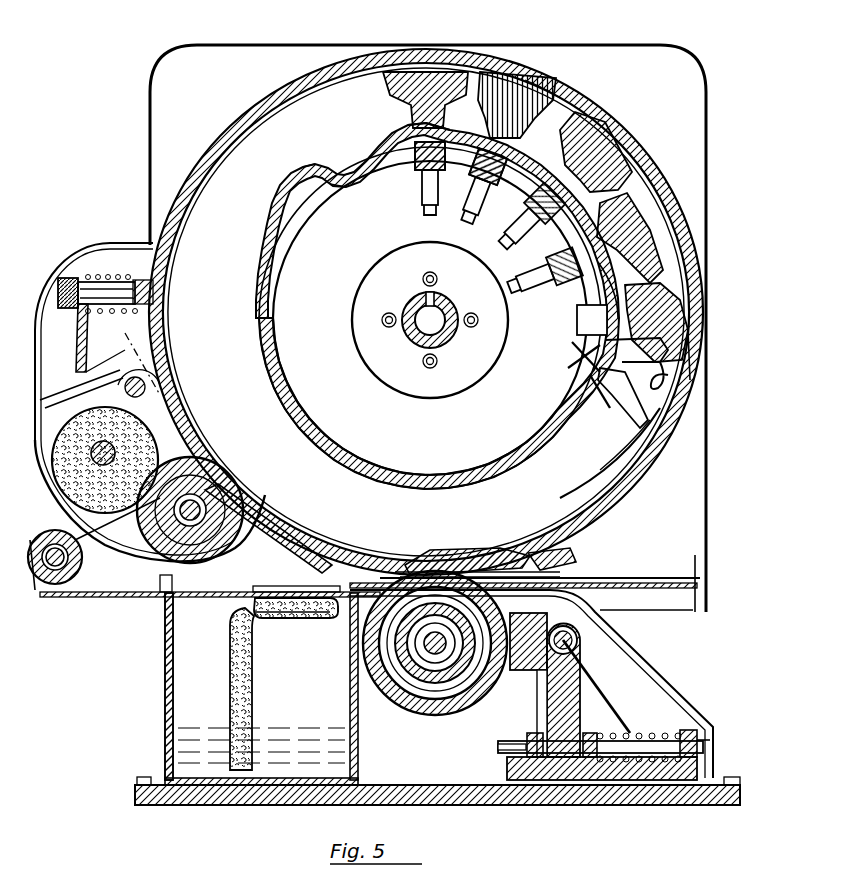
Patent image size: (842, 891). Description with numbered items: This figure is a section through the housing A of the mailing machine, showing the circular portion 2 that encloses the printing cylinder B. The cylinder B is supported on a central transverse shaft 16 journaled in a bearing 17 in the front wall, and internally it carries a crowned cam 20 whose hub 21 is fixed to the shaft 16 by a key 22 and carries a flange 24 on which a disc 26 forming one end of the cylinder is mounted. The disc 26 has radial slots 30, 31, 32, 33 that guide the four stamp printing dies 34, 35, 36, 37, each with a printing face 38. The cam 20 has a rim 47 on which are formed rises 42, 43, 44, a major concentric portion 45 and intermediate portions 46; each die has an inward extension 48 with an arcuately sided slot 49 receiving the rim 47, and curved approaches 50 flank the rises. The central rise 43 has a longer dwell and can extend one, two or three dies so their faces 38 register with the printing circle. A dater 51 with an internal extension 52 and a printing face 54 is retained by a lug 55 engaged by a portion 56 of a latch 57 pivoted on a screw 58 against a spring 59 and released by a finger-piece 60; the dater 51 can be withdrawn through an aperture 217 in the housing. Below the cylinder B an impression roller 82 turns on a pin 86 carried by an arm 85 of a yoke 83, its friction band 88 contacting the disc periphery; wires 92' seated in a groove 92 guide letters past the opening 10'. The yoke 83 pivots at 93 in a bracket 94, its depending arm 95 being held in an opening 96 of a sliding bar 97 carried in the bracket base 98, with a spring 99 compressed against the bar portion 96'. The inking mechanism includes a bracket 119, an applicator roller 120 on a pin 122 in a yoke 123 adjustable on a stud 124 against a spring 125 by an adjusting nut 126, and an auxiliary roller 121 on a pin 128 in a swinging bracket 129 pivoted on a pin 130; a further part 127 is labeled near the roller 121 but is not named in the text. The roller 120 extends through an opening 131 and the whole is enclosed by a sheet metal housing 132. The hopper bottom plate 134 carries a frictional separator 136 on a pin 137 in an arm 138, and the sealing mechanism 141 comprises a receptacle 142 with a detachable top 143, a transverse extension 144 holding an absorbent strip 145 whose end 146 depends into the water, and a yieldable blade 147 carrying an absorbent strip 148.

The housing A is at (525, 68).
The circular portion of housing 2 is at (636, 140).
The printing cylinder B is at (213, 249).
The opening 10' is at (536, 553).
The central transverse shaft 16 is at (418, 343).
The bearing 17 is at (437, 781).
The crowned cam 20 is at (272, 337).
The hub 21 is at (455, 345).
The key 22 is at (414, 295).
The flange 24 is at (440, 378).
The disc 26 is at (487, 546).
The radial slot 30 is at (423, 210).
The radial slot 31 is at (464, 224).
The radial slot 32 is at (505, 243).
The radial slot 33 is at (533, 272).
The stamp printing die 34 is at (395, 98).
The stamp printing die 35 is at (500, 106).
The stamp printing die 36 is at (585, 145).
The stamp printing die 37 is at (625, 220).
The printing face 38 is at (540, 88).
The cam rise 42 is at (290, 188).
The central cam rise 43 is at (472, 160).
The cam rise 44 is at (597, 302).
The major concentric portion 45 is at (296, 402).
The intermediate cam portion 46 is at (350, 170).
The cam rim 47 is at (350, 188).
The die extension 48 is at (413, 168).
The slot 49 is at (406, 126).
The approach 50 is at (325, 172).
The dater 51 is at (665, 344).
The internal extension of dater 52 is at (588, 320).
The printing face of dater 54 is at (703, 318).
The lug 55 is at (700, 388).
The latch portion 56 is at (703, 366).
The latch 57 is at (628, 390).
The screw 58 is at (585, 367).
The spring 59 is at (606, 410).
The finger-piece 60 is at (650, 425).
The impression roller 82 is at (466, 700).
The yoke 83 is at (540, 685).
The yoke arm 85 is at (500, 622).
The pin 86 is at (442, 660).
The friction band 88 is at (472, 688).
The peripheral groove 92 is at (549, 541).
The wire 92' is at (477, 542).
The pivot 93 is at (580, 640).
The bracket 94 is at (606, 708).
The depending arm 95 is at (580, 716).
The opening 96 is at (562, 785).
The bar portion 96' is at (602, 804).
The sliding bar 97 is at (622, 780).
The bracket base 98 is at (665, 782).
The spring 99 is at (648, 740).
The bracket 119 is at (140, 335).
The absorbent applicator roller 120 is at (222, 483).
The auxiliary ink roller 121 is at (150, 432).
The pin 122 is at (220, 505).
The yoke 123 is at (80, 355).
The stud 124 is at (98, 298).
The spring 125 is at (116, 280).
The adjusting nut 126 is at (66, 284).
The shaft 127 is at (152, 406).
The pin 128 is at (165, 452).
The swinging bracket 129 is at (72, 396).
The pin 130 is at (145, 385).
The opening 131 is at (240, 530).
The sheet metal housing 132 is at (32, 300).
The bottom plate 134 is at (95, 600).
The frictional separator 136 is at (70, 568).
The pin 137 is at (40, 590).
The arm 138 is at (52, 540).
The sealing mechanism 141 is at (261, 689).
The receptacle 142 is at (166, 668).
The detachable top 143 is at (215, 598).
The transverse extension 144 is at (316, 620).
The absorbent strip 145 is at (282, 620).
The depending end 146 is at (254, 716).
The yieldable metal blade 147 is at (305, 590).
The absorbent strip 148 is at (290, 594).
The aperture 217 is at (652, 470).